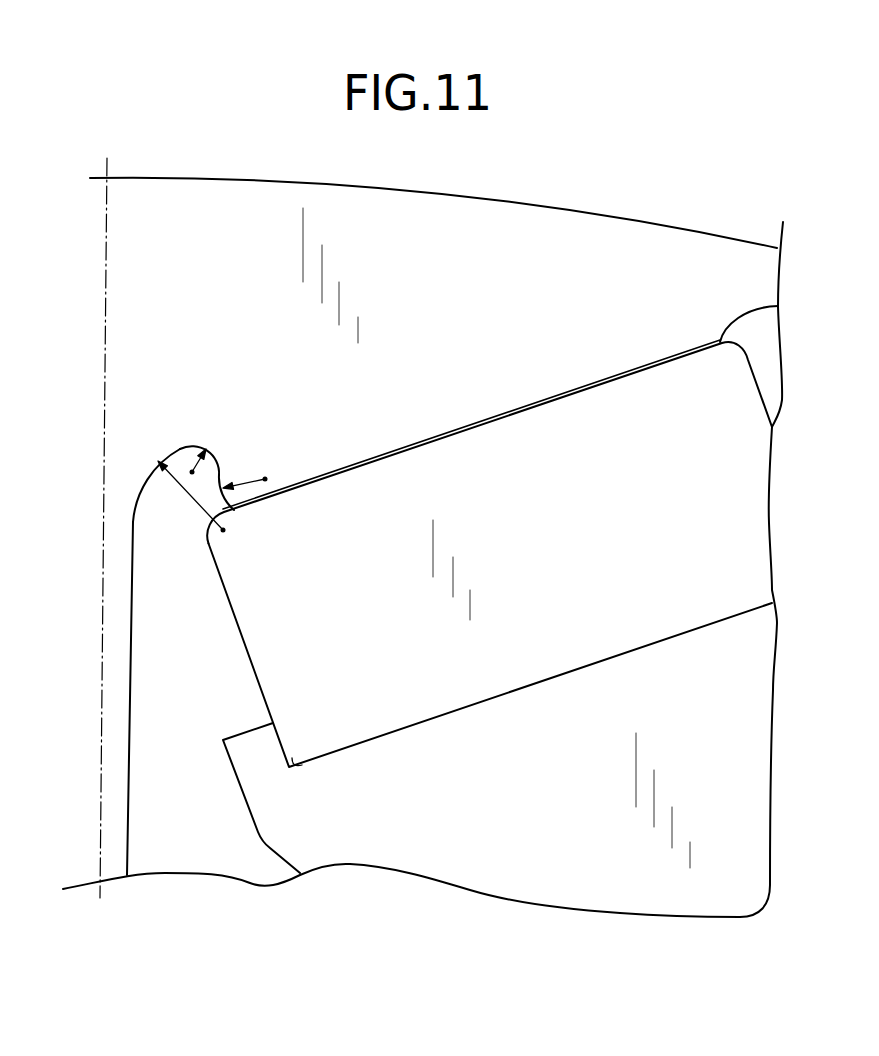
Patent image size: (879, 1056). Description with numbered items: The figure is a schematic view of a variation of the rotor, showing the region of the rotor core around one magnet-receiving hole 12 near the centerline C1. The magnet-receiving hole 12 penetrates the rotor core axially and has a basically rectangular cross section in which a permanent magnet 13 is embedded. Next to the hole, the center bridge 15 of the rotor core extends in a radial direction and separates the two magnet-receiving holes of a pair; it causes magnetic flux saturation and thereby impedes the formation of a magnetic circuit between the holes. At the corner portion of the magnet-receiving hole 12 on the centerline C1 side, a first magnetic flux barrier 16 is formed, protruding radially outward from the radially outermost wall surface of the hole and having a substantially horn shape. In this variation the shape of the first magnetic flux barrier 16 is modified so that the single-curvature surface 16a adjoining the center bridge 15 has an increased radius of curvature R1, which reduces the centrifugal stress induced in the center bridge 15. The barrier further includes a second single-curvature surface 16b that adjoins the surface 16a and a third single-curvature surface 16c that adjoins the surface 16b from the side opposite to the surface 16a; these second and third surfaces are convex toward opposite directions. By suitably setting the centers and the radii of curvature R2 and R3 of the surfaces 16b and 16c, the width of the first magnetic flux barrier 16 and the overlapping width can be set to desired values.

The magnet-receiving hole 12 is at (420, 446).
The permanent magnet 13 is at (530, 458).
The center bridge 15 is at (118, 587).
The first magnetic flux barrier 16 is at (198, 482).
The single-curvature surface 16a is at (150, 480).
The second single-curvature surface 16b is at (221, 457).
The third single-curvature surface 16c is at (226, 496).
The radius of curvature R1 is at (192, 497).
The radius of curvature R2 is at (187, 459).
The radius of curvature R3 is at (245, 470).
The centerline C1 is at (96, 547).